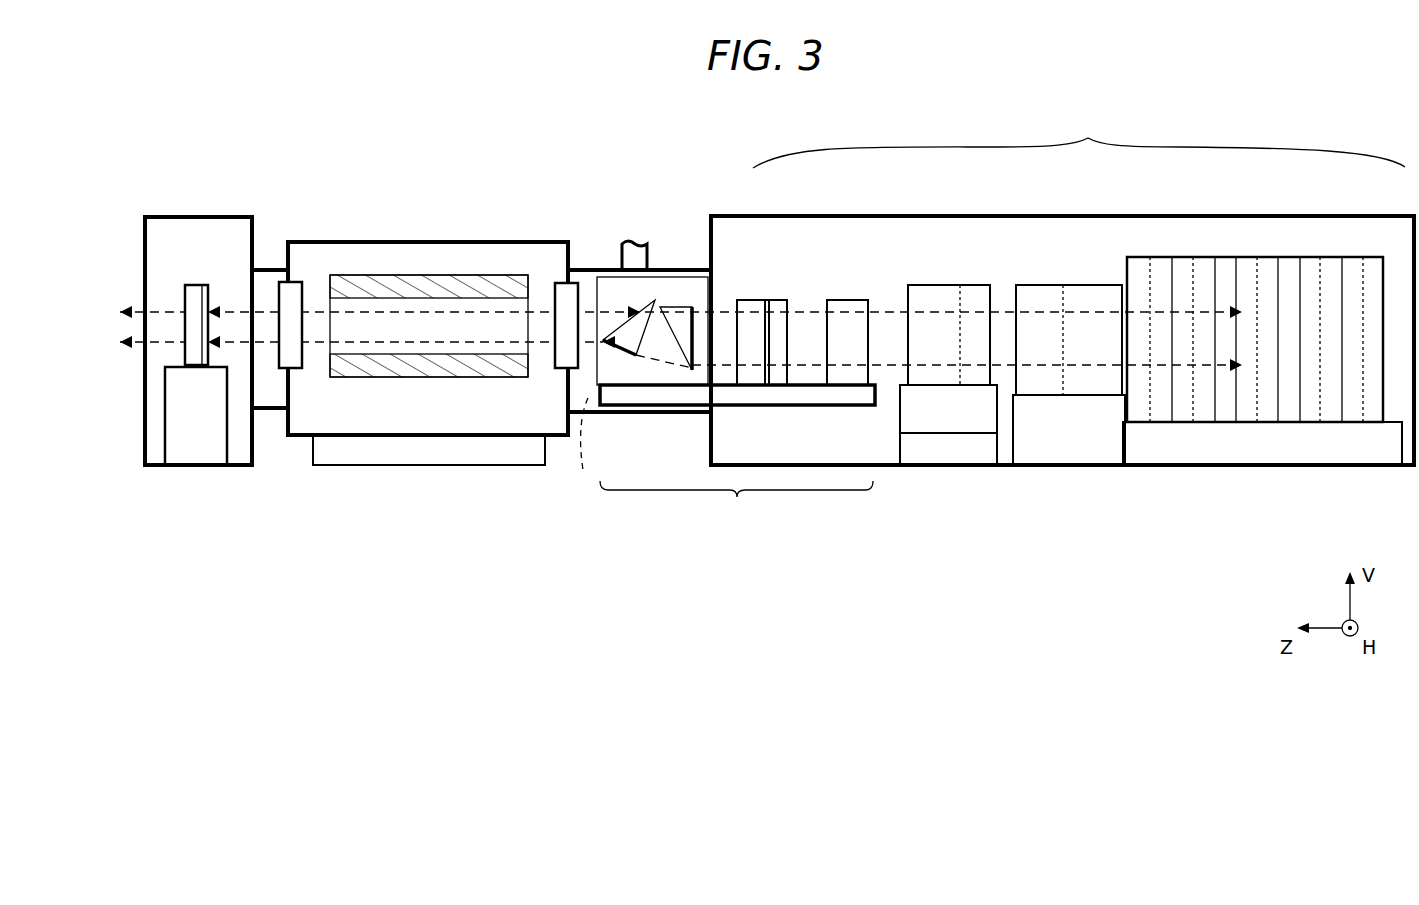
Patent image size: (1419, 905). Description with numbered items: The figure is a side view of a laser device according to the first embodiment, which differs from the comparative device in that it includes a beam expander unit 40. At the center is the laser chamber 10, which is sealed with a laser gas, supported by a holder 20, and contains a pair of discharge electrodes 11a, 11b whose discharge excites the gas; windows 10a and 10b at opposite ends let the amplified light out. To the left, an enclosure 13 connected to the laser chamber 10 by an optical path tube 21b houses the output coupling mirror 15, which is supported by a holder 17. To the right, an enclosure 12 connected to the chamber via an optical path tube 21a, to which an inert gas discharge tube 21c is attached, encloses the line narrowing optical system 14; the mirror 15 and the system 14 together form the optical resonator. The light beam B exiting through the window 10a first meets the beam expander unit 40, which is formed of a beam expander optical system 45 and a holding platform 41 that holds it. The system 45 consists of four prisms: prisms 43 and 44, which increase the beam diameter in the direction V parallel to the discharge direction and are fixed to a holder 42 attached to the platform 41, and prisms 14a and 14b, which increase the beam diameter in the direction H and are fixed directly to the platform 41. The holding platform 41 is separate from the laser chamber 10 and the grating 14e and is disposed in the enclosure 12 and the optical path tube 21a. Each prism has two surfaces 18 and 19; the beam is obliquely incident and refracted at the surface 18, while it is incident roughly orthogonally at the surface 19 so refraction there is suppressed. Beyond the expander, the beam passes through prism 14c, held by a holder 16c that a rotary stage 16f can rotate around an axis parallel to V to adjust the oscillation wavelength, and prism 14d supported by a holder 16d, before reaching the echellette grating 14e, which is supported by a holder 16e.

The laser chamber 10 is at (437, 242).
The window 10a is at (563, 282).
The window 10b is at (292, 282).
The discharge electrode 11a is at (352, 281).
The discharge electrode 11b is at (360, 377).
The enclosure 12 is at (722, 215).
The enclosure 13 is at (190, 217).
The line narrowing optical system 14 is at (1079, 134).
The prism 14a is at (785, 298).
The prism 14b is at (866, 298).
The prism 14c is at (935, 284).
The prism 14d is at (1055, 284).
The grating 14e is at (1245, 257).
The output coupling mirror 15 is at (193, 365).
The holder 16c is at (930, 427).
The holder 16d is at (1058, 460).
The holder 16e is at (1218, 460).
The rotary stage 16f is at (978, 460).
The holder 17 is at (186, 446).
The surface 18 is at (632, 330).
The surface 19 is at (685, 335).
The holder 20 is at (395, 458).
The optical path tube 21a is at (640, 414).
The optical path tube 21b is at (278, 414).
The inert gas discharge tube 21c is at (625, 244).
The beam expander unit 40 is at (777, 562).
The holding platform 41 is at (745, 405).
The holder 42 is at (700, 268).
The prism 43 is at (615, 335).
The prism 44 is at (686, 274).
The beam expander optical system 45 is at (745, 516).
The light beam B is at (584, 451).